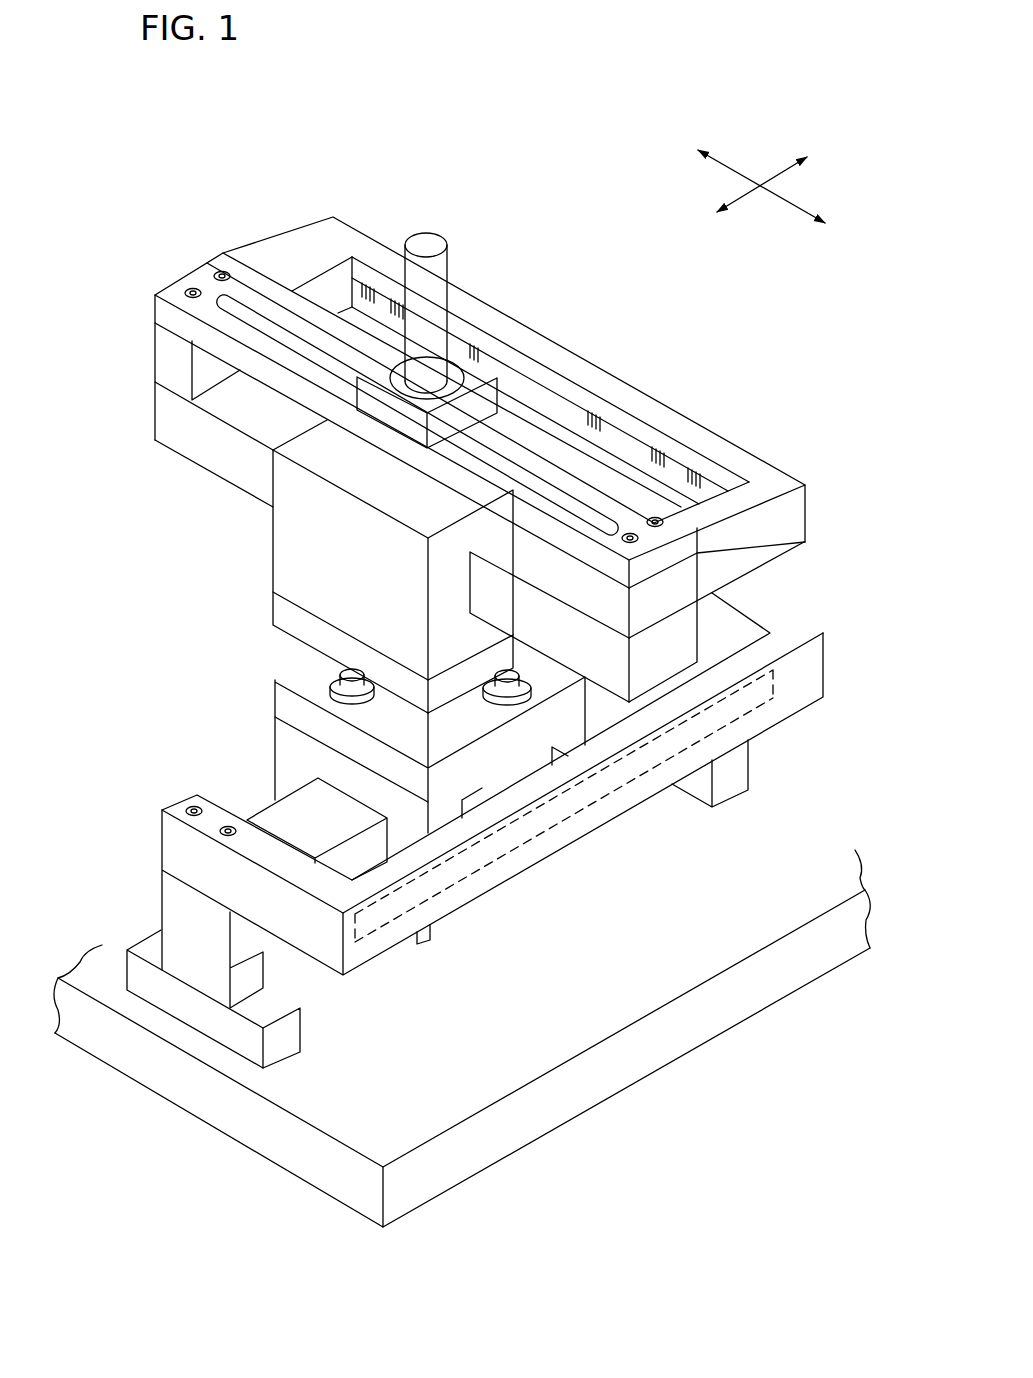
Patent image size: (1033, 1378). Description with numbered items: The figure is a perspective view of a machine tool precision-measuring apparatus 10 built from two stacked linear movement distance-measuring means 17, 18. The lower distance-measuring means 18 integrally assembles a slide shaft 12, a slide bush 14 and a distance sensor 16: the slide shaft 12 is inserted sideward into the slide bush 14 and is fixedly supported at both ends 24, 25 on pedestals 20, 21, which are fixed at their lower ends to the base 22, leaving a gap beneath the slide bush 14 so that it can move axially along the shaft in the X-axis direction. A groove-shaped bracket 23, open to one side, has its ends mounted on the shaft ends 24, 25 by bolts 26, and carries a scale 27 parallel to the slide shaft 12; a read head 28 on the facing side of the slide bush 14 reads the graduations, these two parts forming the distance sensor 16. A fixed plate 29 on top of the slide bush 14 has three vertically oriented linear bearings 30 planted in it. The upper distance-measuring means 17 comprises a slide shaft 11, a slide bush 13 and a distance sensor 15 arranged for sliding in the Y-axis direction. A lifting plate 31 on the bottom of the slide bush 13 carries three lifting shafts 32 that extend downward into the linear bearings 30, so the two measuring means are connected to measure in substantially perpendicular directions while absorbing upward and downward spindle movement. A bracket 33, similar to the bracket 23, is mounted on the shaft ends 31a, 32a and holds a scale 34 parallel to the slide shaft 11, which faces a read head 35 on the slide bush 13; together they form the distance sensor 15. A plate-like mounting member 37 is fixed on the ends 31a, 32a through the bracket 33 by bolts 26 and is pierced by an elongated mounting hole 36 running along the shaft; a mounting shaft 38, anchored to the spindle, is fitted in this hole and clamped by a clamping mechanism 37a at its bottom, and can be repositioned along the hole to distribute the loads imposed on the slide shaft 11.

The machine tool precision-measuring apparatus 10 is at (637, 167).
The first slide shaft 11 is at (200, 435).
The second slide shaft 12 is at (273, 822).
The first slide bush 13 is at (300, 542).
The second slide bush 14 is at (292, 748).
The first distance sensor 15 is at (680, 298).
The second distance sensor 16 is at (582, 940).
The first linear movement distance-measuring means 17 is at (137, 505).
The second linear movement distance-measuring means 18 is at (203, 692).
The pedestal 20 is at (195, 1005).
The pedestal 21 is at (727, 768).
The base 22 is at (330, 1085).
The groove-shaped bracket 23 is at (648, 775).
The end of slide shaft 24 is at (178, 898).
The end of slide shaft 25 is at (720, 664).
The bolts 26 is at (222, 273).
The scale 27 is at (527, 833).
The read head 28 is at (487, 793).
The fixed plate 29 is at (293, 682).
The linear bearings 30 is at (337, 672).
The lifting plate 31 is at (275, 598).
The end of slide shaft 31a is at (150, 415).
The lifting shafts 32 is at (348, 668).
The end of slide shaft 32a is at (682, 633).
The bracket 33 is at (662, 420).
The scale 34 is at (610, 430).
The read head 35 is at (528, 397).
The elongated mounting hole 36 is at (266, 318).
The mounting member 37 is at (298, 310).
The clamping mechanism 37a is at (478, 438).
The mounting shaft 38 is at (440, 268).